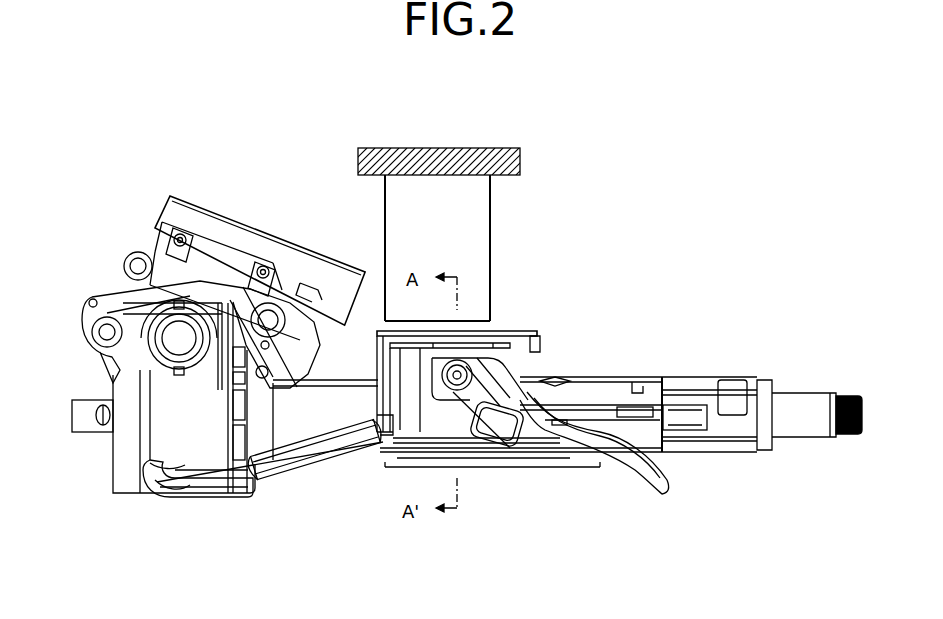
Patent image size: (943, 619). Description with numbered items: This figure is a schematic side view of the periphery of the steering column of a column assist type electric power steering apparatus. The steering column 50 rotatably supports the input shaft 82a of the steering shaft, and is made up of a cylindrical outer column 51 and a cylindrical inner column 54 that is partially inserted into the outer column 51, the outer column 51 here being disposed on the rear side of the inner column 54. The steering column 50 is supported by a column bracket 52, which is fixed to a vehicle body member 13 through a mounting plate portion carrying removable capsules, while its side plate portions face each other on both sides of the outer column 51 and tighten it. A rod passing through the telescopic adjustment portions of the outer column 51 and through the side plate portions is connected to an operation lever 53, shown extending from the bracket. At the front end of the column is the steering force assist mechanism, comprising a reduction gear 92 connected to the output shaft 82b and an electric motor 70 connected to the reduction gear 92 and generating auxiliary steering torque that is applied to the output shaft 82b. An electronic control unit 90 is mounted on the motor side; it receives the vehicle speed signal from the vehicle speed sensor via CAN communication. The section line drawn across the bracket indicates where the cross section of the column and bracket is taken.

The vehicle body member 13 is at (438, 195).
The steering column 50 is at (570, 326).
The outer column 51 is at (608, 386).
The column bracket 52 is at (478, 312).
The operation lever 53 is at (646, 488).
The inner column 54 is at (322, 415).
The electric motor 70 is at (84, 293).
The input shaft 82a is at (800, 402).
The output shaft 82b is at (80, 432).
The electronic control unit 90 is at (305, 235).
The reduction gear 92 is at (178, 504).